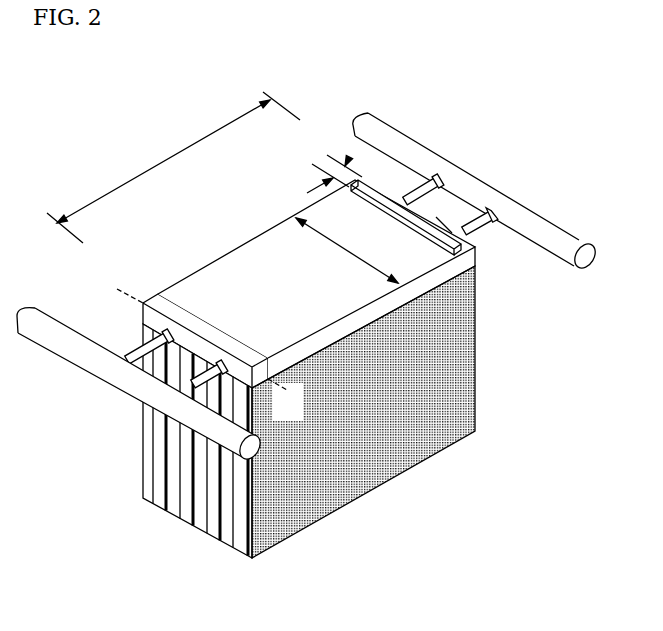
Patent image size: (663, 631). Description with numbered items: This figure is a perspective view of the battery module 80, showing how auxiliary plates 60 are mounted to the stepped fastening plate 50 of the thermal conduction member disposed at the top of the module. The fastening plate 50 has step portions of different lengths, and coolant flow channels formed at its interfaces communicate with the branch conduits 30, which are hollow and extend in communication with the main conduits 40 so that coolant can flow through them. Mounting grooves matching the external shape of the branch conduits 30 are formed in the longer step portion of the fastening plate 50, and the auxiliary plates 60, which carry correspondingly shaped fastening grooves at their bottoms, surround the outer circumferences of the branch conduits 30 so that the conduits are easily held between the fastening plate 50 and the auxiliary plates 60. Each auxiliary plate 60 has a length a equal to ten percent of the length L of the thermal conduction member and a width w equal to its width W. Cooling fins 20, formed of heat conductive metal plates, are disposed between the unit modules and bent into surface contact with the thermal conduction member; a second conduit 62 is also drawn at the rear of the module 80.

The cooling fins 20 is at (417, 460).
The branch conduits 30 is at (480, 238).
The main conduits 40 is at (82, 368).
The fastening plate 50 is at (262, 236).
The auxiliary plates 60 is at (145, 285).
The upper header pipe 62 is at (515, 150).
The battery module 80 is at (54, 140).